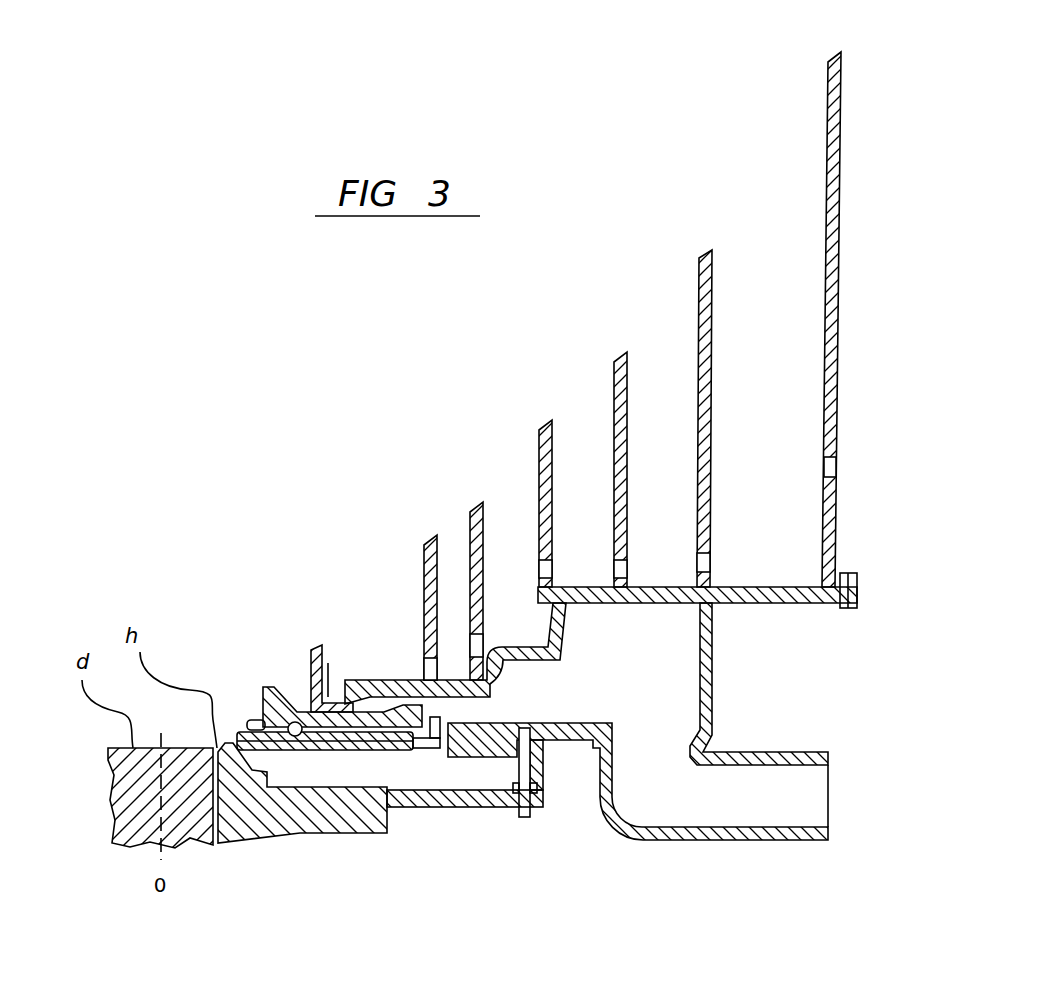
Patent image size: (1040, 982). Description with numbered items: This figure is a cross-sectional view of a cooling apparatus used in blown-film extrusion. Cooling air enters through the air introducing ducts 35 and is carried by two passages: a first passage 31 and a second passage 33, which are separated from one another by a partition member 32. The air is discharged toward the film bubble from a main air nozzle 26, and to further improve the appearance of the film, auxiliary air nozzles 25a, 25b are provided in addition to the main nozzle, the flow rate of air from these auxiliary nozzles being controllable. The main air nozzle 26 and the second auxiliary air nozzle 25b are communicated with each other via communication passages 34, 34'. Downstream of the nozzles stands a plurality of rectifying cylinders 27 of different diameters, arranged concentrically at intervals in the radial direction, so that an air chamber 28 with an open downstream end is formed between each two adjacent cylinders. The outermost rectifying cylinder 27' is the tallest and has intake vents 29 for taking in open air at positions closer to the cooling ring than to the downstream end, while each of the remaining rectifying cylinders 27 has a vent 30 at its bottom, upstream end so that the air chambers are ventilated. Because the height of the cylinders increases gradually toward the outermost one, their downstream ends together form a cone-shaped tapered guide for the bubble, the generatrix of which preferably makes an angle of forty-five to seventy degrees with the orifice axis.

The auxiliary air nozzle 25a is at (222, 740).
The second auxiliary air nozzle 25b is at (243, 733).
The main air nozzle 26 is at (337, 680).
The rectifying cylinders 27 is at (554, 434).
The outermost rectifying cylinder 27' is at (919, 317).
The air chamber 28 is at (797, 371).
The intake vents 29 is at (838, 466).
The vent 30 is at (436, 667).
The first passage 31 is at (292, 780).
The partition member 32 is at (345, 755).
The second passage 33 is at (663, 688).
The communication passage 34 is at (443, 787).
The communication passage 34' is at (502, 787).
The air introducing ducts 35 is at (793, 753).